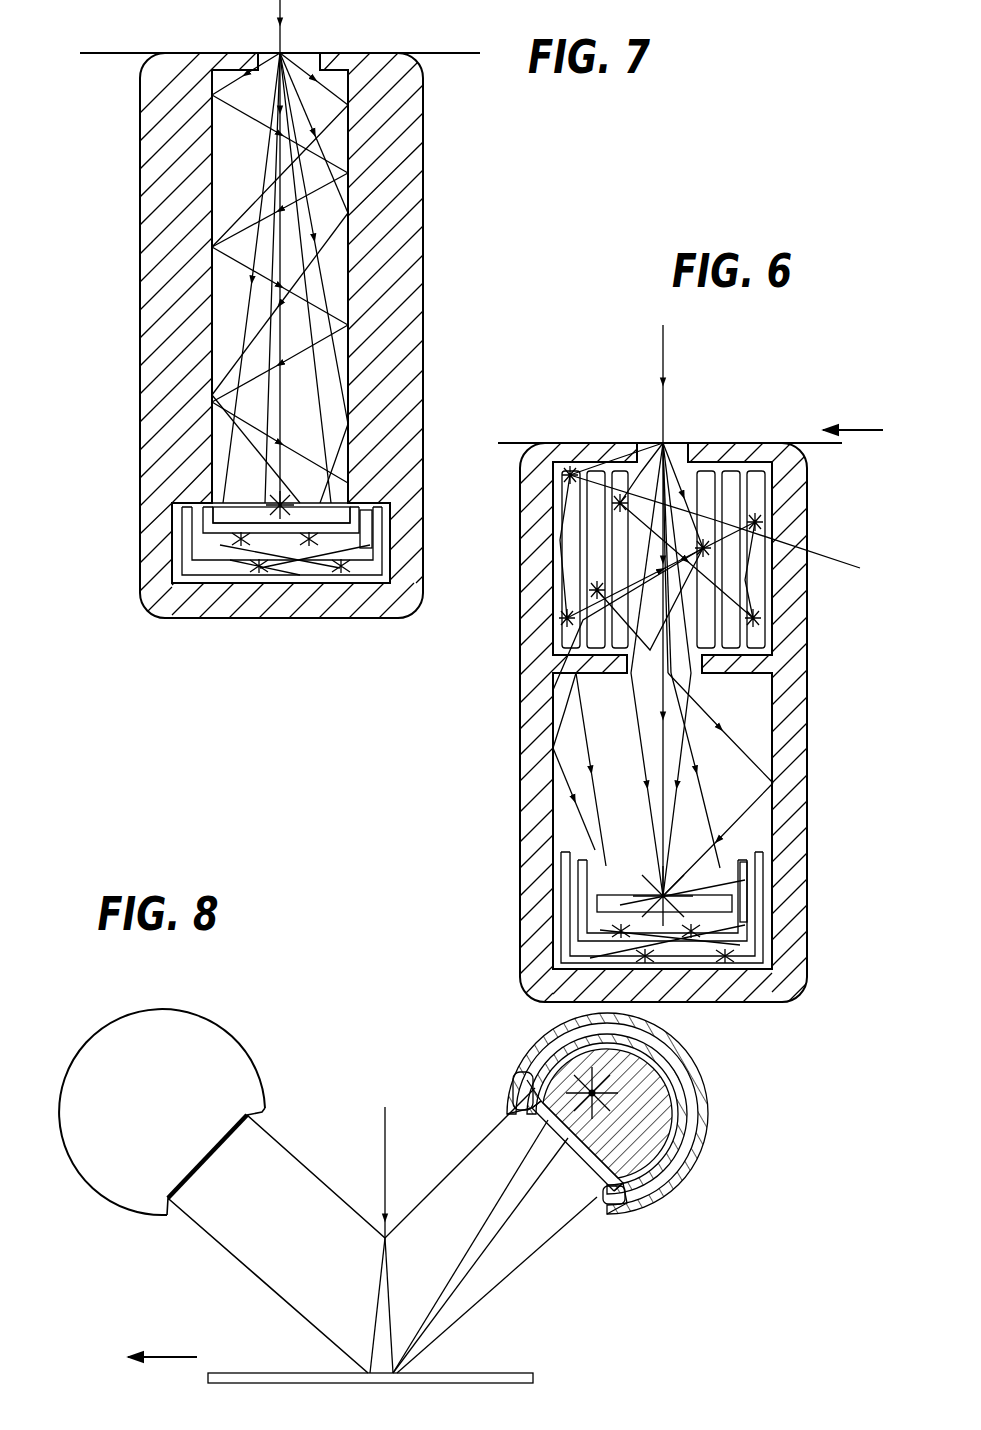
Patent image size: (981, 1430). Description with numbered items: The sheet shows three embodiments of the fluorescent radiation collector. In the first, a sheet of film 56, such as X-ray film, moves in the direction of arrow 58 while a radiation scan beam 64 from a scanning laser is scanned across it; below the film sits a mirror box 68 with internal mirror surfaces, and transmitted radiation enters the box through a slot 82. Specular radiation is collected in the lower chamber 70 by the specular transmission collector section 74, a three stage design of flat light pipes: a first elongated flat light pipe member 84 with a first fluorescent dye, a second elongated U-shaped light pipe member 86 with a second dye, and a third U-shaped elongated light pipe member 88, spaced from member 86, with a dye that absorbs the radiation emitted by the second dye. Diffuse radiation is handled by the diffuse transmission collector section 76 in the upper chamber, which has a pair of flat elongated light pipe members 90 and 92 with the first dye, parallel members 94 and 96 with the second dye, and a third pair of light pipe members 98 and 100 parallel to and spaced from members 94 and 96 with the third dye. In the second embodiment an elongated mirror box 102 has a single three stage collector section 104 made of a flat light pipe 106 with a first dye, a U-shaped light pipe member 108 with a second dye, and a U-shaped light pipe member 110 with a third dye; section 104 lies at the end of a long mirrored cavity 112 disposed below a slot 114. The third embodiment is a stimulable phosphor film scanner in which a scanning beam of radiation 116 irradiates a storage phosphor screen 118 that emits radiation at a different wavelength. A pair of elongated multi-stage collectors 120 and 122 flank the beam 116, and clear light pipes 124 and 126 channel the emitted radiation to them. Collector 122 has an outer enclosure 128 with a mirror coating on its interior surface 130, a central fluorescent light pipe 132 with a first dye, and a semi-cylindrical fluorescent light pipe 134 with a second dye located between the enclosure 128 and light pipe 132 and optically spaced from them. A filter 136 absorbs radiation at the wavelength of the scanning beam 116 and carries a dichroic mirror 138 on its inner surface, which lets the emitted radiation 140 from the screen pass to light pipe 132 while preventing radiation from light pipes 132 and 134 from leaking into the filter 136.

In FIG. 7, the elongated mirror box 102 is at (139, 266).
In FIG. 7, the three stage collector section 104 is at (390, 563).
In FIG. 7, the flat light pipe 106 is at (350, 494).
In FIG. 7, the U-shaped light pipe member 108 is at (192, 503).
In FIG. 7, the U-shaped light pipe member 110 is at (182, 547).
In FIG. 7, the mirrored cavity 112 is at (338, 280).
In FIG. 7, the slot 114 is at (263, 62).
In FIG. 6, the sheet of film 56 is at (806, 443).
In FIG. 6, the arrow 58 is at (862, 430).
In FIG. 6, the radiation scan beam 64 is at (670, 399).
In FIG. 6, the mirror box 68 is at (809, 747).
In FIG. 6, the lower chamber 70 is at (739, 788).
In FIG. 6, the specular transmission collector section 74 is at (750, 846).
In FIG. 6, the diffuse transmission collector section 76 is at (777, 573).
In FIG. 6, the slot 82 is at (655, 443).
In FIG. 6, the first elongated flat light pipe member 84 is at (701, 883).
In FIG. 6, the second elongated U-shaped light pipe member 86 is at (585, 851).
In FIG. 6, the third U-shaped elongated light pipe member 88 is at (563, 851).
In FIG. 6, the flat elongated light pipe member 90 is at (617, 482).
In FIG. 6, the flat elongated light pipe member 92 is at (700, 630).
In FIG. 6, the flat elongated light pipe member 94 is at (597, 468).
In FIG. 6, the flat elongated light pipe member 96 is at (722, 640).
In FIG. 6, the light pipe member 98 is at (552, 520).
In FIG. 6, the light pipe member 100 is at (760, 641).
In FIG. 8, the scanning beam of radiation 116 is at (381, 1143).
In FIG. 8, the storage phosphor screen 118 is at (523, 1374).
In FIG. 8, the multi-stage collector 120 is at (253, 1044).
In FIG. 8, the multi-stage collector 122 is at (615, 1139).
In FIG. 8, the clear light pipe 124 is at (257, 1273).
In FIG. 8, the clear light pipe 126 is at (490, 1292).
In FIG. 8, the outer enclosure 128 is at (538, 1046).
In FIG. 8, the interior surface 130 is at (537, 1067).
In FIG. 8, the central fluorescent light pipe 132 is at (644, 1120).
In FIG. 8, the semi-cylindrical fluorescent light pipe 134 is at (688, 1083).
In FIG. 8, the filter 136 is at (545, 1128).
In FIG. 8, the dichroic mirror 138 is at (601, 1205).
In FIG. 8, the emitted radiation 140 is at (477, 1270).